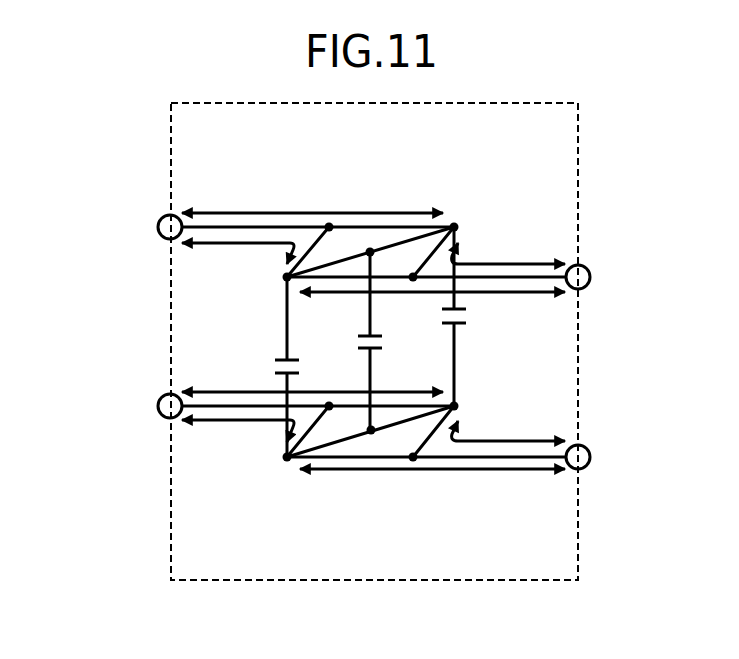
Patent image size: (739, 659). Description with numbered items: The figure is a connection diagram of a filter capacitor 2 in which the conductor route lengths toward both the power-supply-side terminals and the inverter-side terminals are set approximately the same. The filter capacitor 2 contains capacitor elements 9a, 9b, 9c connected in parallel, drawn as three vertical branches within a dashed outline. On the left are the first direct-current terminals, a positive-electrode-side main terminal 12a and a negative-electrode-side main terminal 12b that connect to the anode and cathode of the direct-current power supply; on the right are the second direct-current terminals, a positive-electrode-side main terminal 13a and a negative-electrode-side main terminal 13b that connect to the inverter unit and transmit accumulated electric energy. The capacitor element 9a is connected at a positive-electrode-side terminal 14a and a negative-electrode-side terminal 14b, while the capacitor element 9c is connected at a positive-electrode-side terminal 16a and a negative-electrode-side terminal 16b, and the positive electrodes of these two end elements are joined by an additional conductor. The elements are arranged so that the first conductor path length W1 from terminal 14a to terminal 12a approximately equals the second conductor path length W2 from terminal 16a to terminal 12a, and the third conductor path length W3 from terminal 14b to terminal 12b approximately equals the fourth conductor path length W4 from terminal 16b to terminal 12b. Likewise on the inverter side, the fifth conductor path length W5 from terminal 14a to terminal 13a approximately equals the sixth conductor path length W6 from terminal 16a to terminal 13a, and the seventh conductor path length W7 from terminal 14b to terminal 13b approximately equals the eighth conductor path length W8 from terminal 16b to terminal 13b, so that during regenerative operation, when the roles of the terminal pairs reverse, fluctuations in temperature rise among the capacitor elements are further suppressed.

The filter capacitor 2 is at (170, 130).
The capacitor element 9a is at (450, 324).
The capacitor element 9b is at (382, 337).
The capacitor element 9c is at (298, 358).
The positive-electrode-side main terminal 12a is at (158, 227).
The negative-electrode-side main terminal 12b is at (158, 406).
The positive-electrode-side main terminal 13a is at (591, 277).
The negative-electrode-side main terminal 13b is at (591, 457).
The positive-electrode-side terminal 14a is at (457, 225).
The negative-electrode-side terminal 14b is at (457, 404).
The positive-electrode-side terminal 16a is at (285, 279).
The negative-electrode-side terminal 16b is at (285, 458).
The first conductor path length W1 is at (232, 212).
The second conductor path length W2 is at (234, 248).
The third conductor path length W3 is at (232, 388).
The fourth conductor path length W4 is at (234, 425).
The fifth conductor path length W5 is at (510, 261).
The sixth conductor path length W6 is at (508, 306).
The seventh conductor path length W7 is at (510, 437).
The eighth conductor path length W8 is at (508, 473).